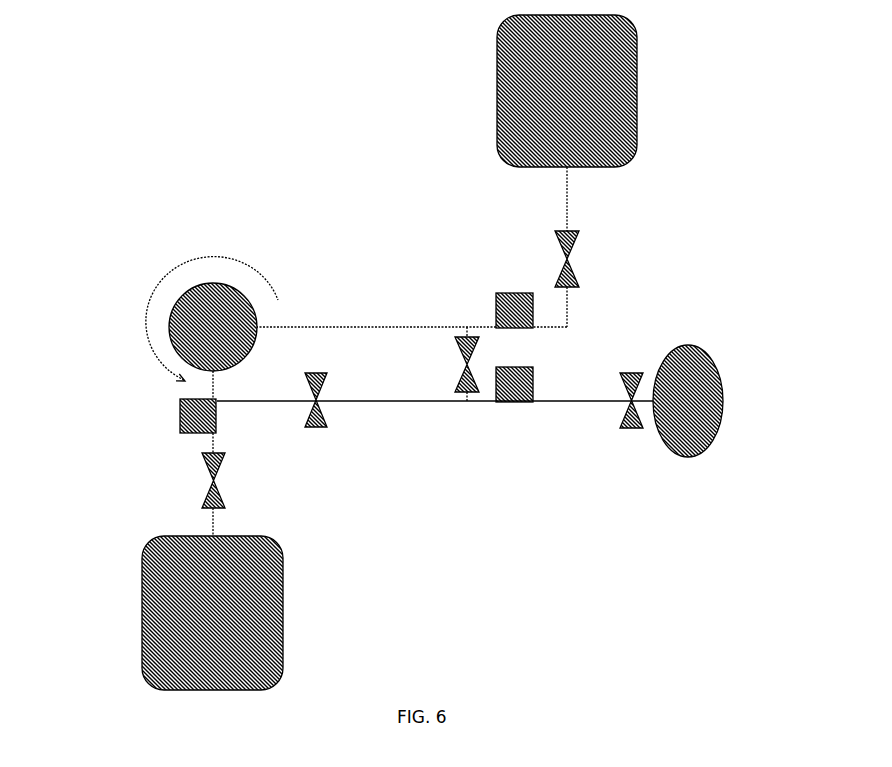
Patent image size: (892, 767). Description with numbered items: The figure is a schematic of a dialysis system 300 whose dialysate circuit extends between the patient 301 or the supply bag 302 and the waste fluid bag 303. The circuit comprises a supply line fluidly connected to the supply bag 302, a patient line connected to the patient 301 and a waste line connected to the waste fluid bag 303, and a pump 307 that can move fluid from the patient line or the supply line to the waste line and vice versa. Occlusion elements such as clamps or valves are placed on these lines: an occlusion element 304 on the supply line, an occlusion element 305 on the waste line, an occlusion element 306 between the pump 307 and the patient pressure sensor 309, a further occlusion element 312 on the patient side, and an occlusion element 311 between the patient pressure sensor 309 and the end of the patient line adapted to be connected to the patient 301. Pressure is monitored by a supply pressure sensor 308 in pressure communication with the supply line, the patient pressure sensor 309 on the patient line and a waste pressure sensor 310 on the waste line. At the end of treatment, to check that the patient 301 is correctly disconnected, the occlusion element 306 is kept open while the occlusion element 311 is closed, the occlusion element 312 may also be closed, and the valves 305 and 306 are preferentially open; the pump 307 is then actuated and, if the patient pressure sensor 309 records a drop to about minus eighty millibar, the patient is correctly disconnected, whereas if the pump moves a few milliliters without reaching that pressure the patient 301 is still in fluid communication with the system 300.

The system 300 is at (148, 177).
The patient 301 is at (720, 363).
The supply bag 302 is at (650, 87).
The waste fluid bag 303 is at (298, 595).
The occlusion element 304 is at (578, 253).
The occlusion element 305 is at (198, 478).
The occlusion element 306 is at (455, 363).
The pump 307 is at (283, 297).
The supply pressure sensor 308 is at (500, 288).
The patient pressure sensor 309 is at (510, 417).
The waste pressure sensor 310 is at (170, 417).
The occlusion element 311 is at (632, 432).
The occlusion element 312 is at (317, 433).